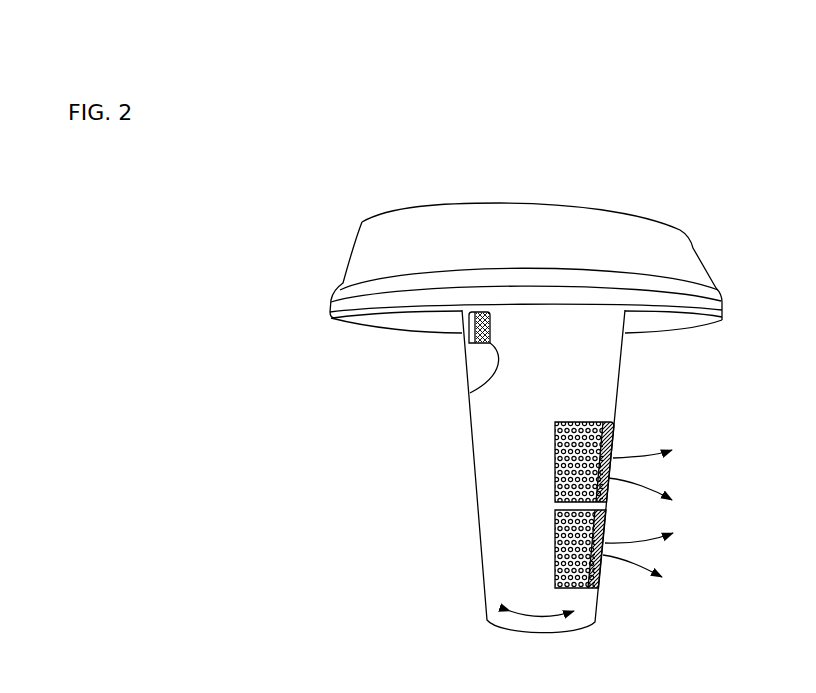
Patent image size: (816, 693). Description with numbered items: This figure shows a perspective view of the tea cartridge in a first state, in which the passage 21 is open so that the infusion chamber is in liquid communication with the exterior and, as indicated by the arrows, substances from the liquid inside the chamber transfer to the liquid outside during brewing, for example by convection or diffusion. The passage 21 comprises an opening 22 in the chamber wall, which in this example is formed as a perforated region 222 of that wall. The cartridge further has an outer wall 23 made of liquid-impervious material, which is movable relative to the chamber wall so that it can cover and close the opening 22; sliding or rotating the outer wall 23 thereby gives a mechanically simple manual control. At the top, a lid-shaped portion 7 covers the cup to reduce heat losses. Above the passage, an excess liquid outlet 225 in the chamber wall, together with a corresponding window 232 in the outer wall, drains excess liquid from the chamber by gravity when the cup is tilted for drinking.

The lid-shaped portion 7 is at (373, 253).
The outer wall 23 is at (497, 487).
The excess liquid outlet 225 is at (464, 341).
The window 232 is at (470, 393).
The opening 22 is at (615, 447).
The passage 21 is at (555, 548).
The perforated region 222 is at (605, 563).